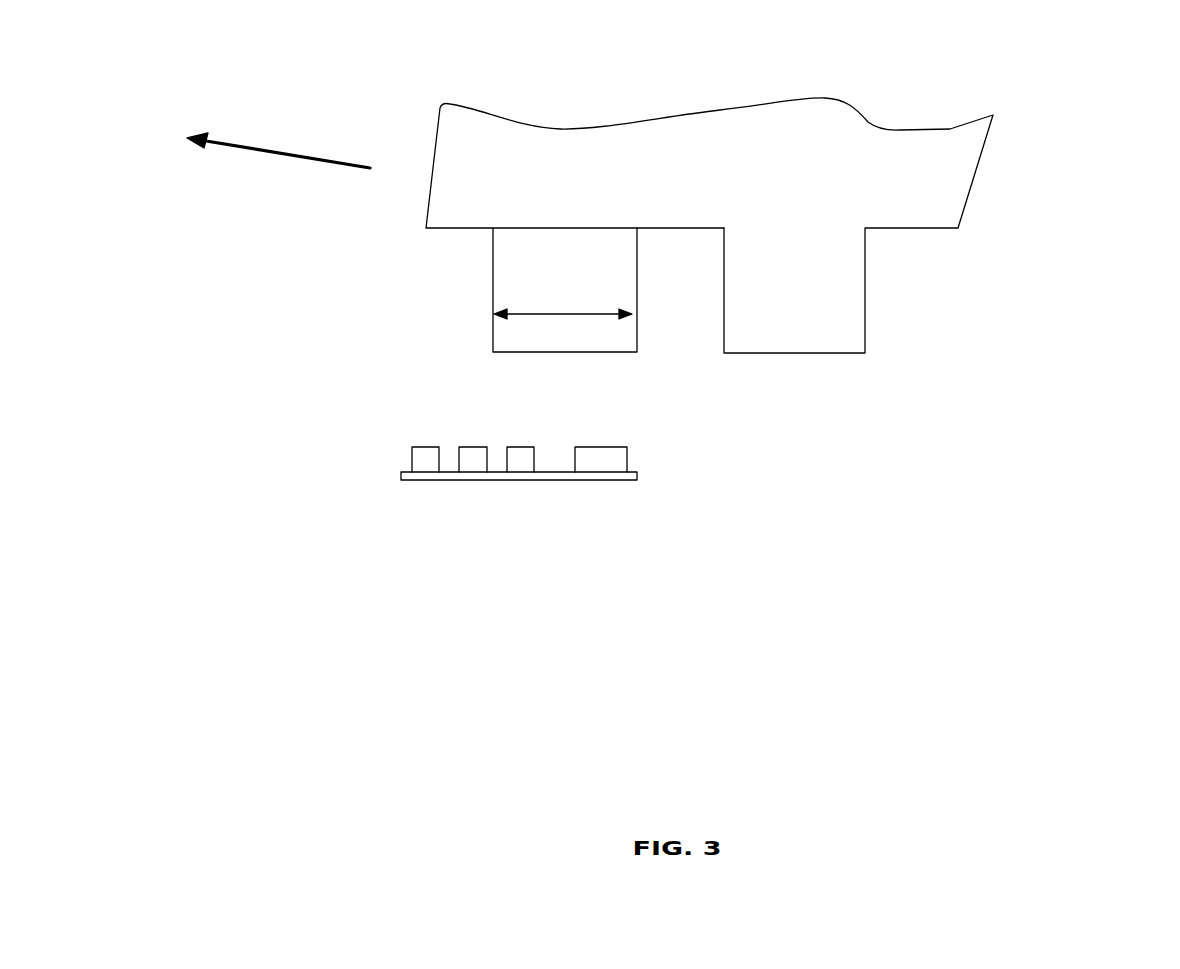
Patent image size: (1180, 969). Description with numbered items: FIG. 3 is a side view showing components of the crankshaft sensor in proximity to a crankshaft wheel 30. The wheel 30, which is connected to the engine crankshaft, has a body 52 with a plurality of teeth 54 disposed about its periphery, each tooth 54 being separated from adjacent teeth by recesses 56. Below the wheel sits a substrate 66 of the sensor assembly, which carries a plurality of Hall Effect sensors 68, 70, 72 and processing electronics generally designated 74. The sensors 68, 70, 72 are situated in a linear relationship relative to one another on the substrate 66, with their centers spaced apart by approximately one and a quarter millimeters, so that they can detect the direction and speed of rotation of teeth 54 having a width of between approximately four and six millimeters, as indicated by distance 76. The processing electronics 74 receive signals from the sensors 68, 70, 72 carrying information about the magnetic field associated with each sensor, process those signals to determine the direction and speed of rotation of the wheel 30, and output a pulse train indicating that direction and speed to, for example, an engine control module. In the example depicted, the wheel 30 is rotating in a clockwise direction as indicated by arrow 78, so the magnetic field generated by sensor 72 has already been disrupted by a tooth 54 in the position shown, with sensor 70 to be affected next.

The wheel 30 is at (753, 196).
The body 52 is at (473, 167).
The tooth 54 is at (490, 293).
The recess 56 is at (657, 234).
The substrate 66 is at (563, 480).
The Hall Effect sensor 68 is at (423, 460).
The Hall Effect sensor 70 is at (472, 460).
The Hall Effect sensor 72 is at (520, 460).
The processing electronics 74 is at (602, 460).
The distance 76 is at (543, 310).
The arrow 78 is at (248, 148).